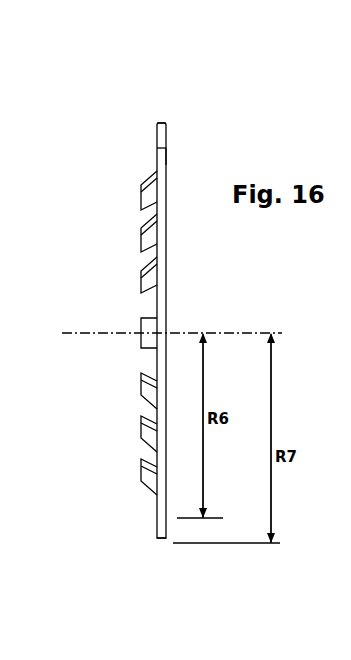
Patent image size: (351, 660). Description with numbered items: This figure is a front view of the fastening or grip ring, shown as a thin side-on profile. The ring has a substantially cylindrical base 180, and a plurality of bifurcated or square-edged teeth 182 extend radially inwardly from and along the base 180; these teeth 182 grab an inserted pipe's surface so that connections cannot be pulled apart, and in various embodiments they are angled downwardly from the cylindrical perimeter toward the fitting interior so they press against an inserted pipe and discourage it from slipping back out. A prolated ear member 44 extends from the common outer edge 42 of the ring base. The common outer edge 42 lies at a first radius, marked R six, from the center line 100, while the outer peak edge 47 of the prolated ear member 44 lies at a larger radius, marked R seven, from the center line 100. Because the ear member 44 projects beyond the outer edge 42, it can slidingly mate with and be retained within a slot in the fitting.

The base 180 is at (156, 122).
The prolated ear member 44 is at (167, 132).
The common outer edge 42 is at (167, 162).
The teeth 182 is at (140, 330).
The center line 100 is at (238, 333).
The outer peak edge 47 is at (159, 546).